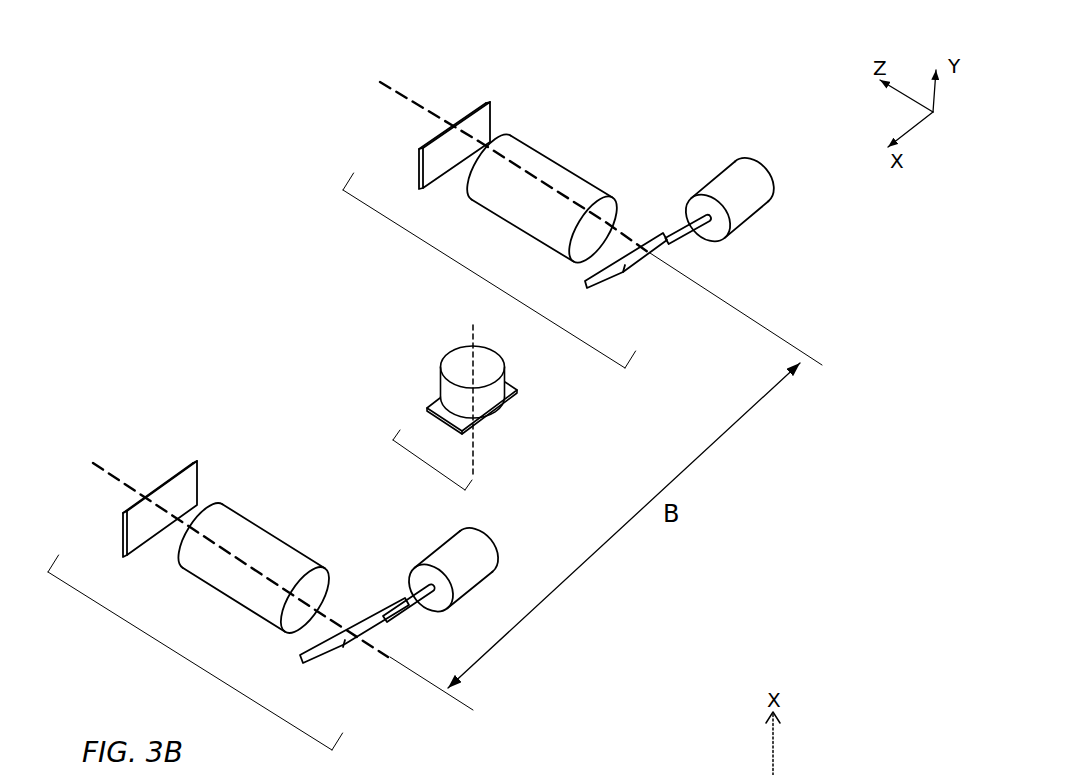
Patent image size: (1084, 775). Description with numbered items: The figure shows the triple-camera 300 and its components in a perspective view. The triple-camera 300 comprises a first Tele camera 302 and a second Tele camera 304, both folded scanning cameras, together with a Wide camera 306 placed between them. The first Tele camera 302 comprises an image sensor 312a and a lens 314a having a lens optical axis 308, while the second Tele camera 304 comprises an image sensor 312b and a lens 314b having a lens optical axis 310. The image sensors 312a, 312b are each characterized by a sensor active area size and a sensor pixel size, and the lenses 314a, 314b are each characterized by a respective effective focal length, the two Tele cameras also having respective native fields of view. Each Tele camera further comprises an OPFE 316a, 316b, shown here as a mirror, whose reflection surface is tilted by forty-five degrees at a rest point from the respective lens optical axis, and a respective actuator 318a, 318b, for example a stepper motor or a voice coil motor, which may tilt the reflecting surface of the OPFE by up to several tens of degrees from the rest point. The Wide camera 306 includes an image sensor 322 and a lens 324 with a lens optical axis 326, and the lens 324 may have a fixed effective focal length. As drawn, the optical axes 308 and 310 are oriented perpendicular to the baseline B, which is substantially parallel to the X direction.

The triple-camera 300 is at (477, 63).
The first Tele camera 302 is at (483, 277).
The second Tele camera 304 is at (190, 662).
The Wide camera 306 is at (425, 467).
The lens optical axis 308 is at (392, 93).
The lens optical axis 310 is at (105, 468).
The image sensor 312a is at (420, 167).
The image sensor 312b is at (123, 529).
The lens 314a is at (517, 229).
The lens 314b is at (227, 600).
The OPFE 316a is at (603, 284).
The OPFE 316b is at (325, 662).
The actuator 318a is at (717, 182).
The actuator 318b is at (446, 552).
The image sensor 322 is at (475, 423).
The lens 324 is at (503, 377).
The lens optical axis 326 is at (477, 467).